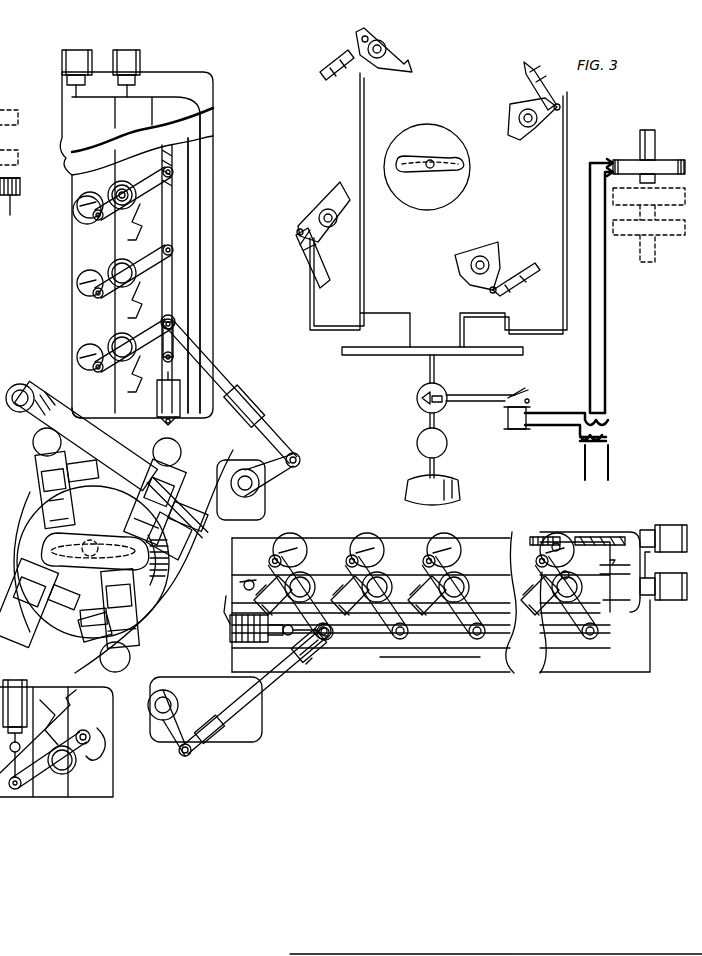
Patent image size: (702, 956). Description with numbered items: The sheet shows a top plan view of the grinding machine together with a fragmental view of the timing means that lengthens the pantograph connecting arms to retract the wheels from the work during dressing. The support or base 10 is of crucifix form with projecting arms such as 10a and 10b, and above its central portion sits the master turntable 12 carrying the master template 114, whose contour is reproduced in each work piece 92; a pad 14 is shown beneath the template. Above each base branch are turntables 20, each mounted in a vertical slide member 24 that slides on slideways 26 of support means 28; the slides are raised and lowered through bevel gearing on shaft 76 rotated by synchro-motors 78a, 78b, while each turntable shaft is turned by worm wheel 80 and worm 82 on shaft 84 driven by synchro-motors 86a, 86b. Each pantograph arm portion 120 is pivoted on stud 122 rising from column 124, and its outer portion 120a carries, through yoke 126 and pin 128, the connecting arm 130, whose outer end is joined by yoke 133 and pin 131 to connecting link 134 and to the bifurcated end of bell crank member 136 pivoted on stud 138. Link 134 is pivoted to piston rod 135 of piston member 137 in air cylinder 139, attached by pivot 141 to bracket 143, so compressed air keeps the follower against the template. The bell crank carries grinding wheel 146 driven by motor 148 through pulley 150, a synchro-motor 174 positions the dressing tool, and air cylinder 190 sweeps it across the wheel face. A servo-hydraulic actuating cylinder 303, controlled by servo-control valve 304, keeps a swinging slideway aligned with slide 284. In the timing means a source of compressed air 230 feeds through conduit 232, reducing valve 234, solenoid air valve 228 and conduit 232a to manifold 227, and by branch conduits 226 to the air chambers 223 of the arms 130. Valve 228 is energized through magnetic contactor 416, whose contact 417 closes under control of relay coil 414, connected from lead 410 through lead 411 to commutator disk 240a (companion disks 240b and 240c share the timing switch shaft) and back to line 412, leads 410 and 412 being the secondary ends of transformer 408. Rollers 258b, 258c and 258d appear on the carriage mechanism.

In FIG. 1, the support or base 10 is at (198, 455).
In FIG. 1, the projecting arm 10a is at (550, 684).
In FIG. 1, the projecting arm 10b is at (222, 103).
In FIG. 1, the master turntable 12 is at (108, 518).
In FIG. 3, the master turntable 12 is at (424, 126).
In FIG. 1, the article pad 14 is at (95, 540).
In FIG. 3, the article pad 14 is at (425, 172).
In FIG. 1, the turntable 20 is at (92, 200).
In FIG. 1, the vertical slide member 24 is at (80, 128).
In FIG. 1, the slideways 26 is at (262, 562).
In FIG. 1, the support means 28 is at (205, 233).
In FIG. 1, the shaft 76 is at (620, 625).
In FIG. 1, the synchro-motor 78a is at (670, 600).
In FIG. 1, the synchro-motor 78b is at (128, 56).
In FIG. 1, the worm wheel 80 is at (556, 535).
In FIG. 1, the worm 82 is at (556, 545).
In FIG. 1, the shaft 84 is at (585, 545).
In FIG. 1, the synchro-motor 86a is at (668, 535).
In FIG. 1, the synchro-motor 86b is at (76, 56).
In FIG. 1, the work piece 92 is at (78, 205).
In FIG. 1, the master template 114 is at (92, 566).
In FIG. 3, the master template 114 is at (440, 166).
In FIG. 1, the pantograph arm portion 120 is at (52, 645).
In FIG. 3, the pantograph arm portion 120 is at (412, 68).
In FIG. 1, the arm portion 120a is at (268, 484).
In FIG. 1, the stud 122 is at (265, 494).
In FIG. 1, the column 124 is at (112, 708).
In FIG. 1, the yoke 126 is at (288, 450).
In FIG. 1, the pin 128 is at (295, 455).
In FIG. 1, the connecting arm 130 is at (215, 392).
In FIG. 3, the connecting arm 130 is at (328, 68).
In FIG. 1, the pin 131 is at (182, 326).
In FIG. 1, the yoke 133 is at (190, 348).
In FIG. 1, the connecting link 134 is at (200, 196).
In FIG. 1, the piston rod 135 is at (292, 660).
In FIG. 1, the bell crank member 136 is at (140, 178).
In FIG. 1, the piston member 137 is at (230, 600).
In FIG. 1, the stud 138 is at (122, 190).
In FIG. 1, the air cylinder 139 is at (230, 618).
In FIG. 1, the pivot 141 is at (230, 632).
In FIG. 1, the bracket 143 is at (232, 648).
In FIG. 1, the grinding wheel 146 is at (75, 248).
In FIG. 1, the motor 148 is at (88, 350).
In FIG. 1, the pulley 150 is at (472, 570).
In FIG. 1, the synchro-motor 174 is at (390, 648).
In FIG. 1, the air cylinder 190 is at (180, 300).
In FIG. 3, the air chamber 223 is at (515, 268).
In FIG. 3, the conduit 226 is at (358, 302).
In FIG. 3, the manifold 227 is at (440, 338).
In FIG. 3, the solenoid air valve 228 is at (446, 390).
In FIG. 3, the source of compressed air 230 is at (448, 495).
In FIG. 3, the conduit 232 is at (428, 474).
In FIG. 3, the conduit 232a is at (428, 370).
In FIG. 3, the reducing valve 234 is at (418, 434).
In FIG. 3, the commutator disk 240a is at (628, 148).
In FIG. 3, the commutator disk 240b is at (662, 158).
In FIG. 1, the commutator disk 240c is at (17, 203).
In FIG. 3, the commutator disk 240c is at (672, 240).
In FIG. 1, the roller 258b is at (118, 665).
In FIG. 1, the roller 258c is at (155, 453).
In FIG. 1, the arm 258d is at (48, 390).
In FIG. 1, the slide 284 is at (60, 488).
In FIG. 1, the servo-hydraulic actuating cylinder 303 is at (99, 463).
In FIG. 1, the servo-control valve 304 is at (56, 478).
In FIG. 3, the transformer 408 is at (624, 445).
In FIG. 3, the lead 410 is at (540, 412).
In FIG. 3, the lead 411 is at (592, 362).
In FIG. 3, the line 412 is at (665, 300).
In FIG. 3, the relay coil 414 is at (514, 440).
In FIG. 3, the magnetic contactor 416 is at (512, 398).
In FIG. 3, the contact 417 is at (530, 390).